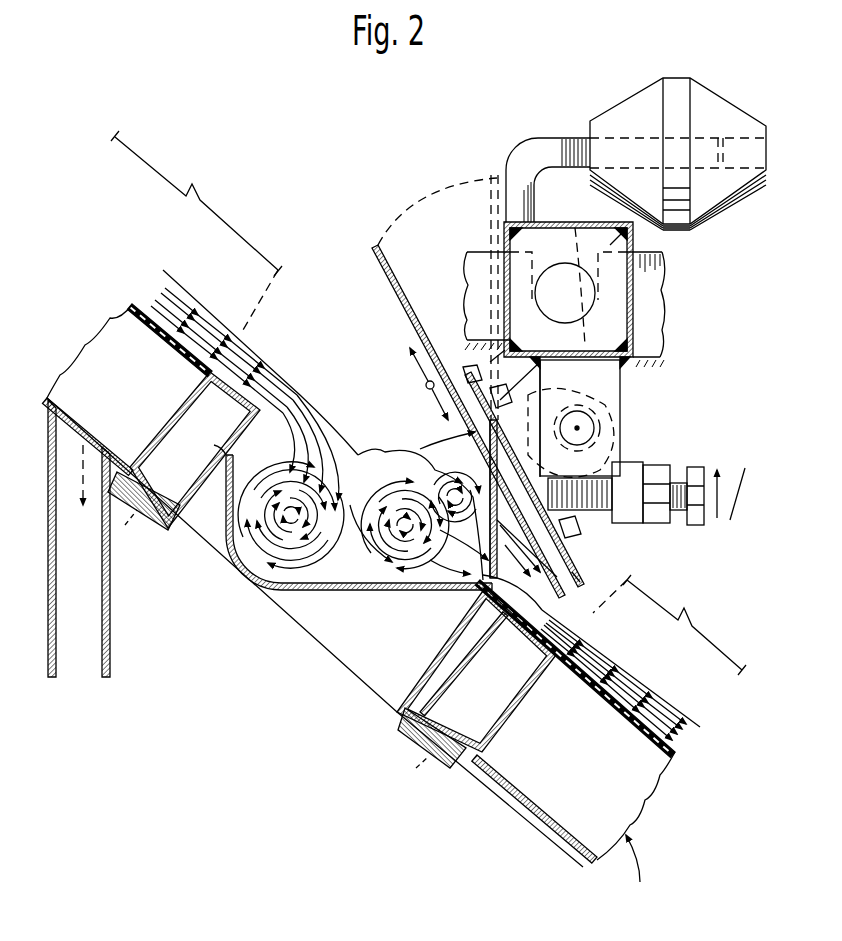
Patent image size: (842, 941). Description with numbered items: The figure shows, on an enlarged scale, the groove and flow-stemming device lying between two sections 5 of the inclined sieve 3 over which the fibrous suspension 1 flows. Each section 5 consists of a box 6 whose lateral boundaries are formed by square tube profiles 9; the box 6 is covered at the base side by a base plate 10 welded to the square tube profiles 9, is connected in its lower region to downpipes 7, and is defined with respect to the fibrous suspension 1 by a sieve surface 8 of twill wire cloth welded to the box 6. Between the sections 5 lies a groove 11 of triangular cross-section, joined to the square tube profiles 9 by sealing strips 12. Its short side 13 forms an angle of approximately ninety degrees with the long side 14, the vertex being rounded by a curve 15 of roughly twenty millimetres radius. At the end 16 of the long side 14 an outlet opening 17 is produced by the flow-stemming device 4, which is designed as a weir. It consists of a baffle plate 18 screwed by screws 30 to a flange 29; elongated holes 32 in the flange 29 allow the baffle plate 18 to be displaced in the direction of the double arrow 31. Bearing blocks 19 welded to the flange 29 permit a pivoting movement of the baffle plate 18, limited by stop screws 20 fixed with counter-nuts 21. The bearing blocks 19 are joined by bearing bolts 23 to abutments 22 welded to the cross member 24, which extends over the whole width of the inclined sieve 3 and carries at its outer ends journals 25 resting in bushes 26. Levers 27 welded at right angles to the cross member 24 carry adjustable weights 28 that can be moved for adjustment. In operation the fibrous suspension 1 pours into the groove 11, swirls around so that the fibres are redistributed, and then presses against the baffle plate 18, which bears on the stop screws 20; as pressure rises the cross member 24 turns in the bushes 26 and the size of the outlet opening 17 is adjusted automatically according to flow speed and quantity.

The fibrous suspension 1 is at (176, 294).
The inclined sieve 3 is at (636, 869).
The flow-stemming device 4 is at (437, 443).
The section 5 is at (428, 403).
The box 6 is at (361, 582).
The downpipe 7 is at (80, 672).
The sieve surface 8 is at (150, 311).
The square tube profile 9 is at (178, 404).
The base plate 10 is at (117, 452).
The groove 11 is at (332, 594).
The sealing strip 12 is at (163, 522).
The short side 13 is at (226, 510).
The long side 14 is at (415, 592).
The curve 15 is at (256, 575).
The end 16 is at (490, 517).
The outlet opening 17 is at (488, 590).
The baffle plate 18 is at (389, 272).
The bearing block 19 is at (540, 417).
The stop screw 20 is at (696, 468).
The counter-nut 21 is at (651, 470).
The abutment 22 is at (608, 385).
The bearing bolt 23 is at (580, 428).
The cross member 24 is at (632, 243).
The journal 25 is at (556, 280).
The bush 26 is at (578, 240).
The lever 27 is at (560, 140).
The adjustable weight 28 is at (635, 102).
The flange 29 is at (470, 372).
The screw 30 is at (508, 396).
The double arrow 31 is at (427, 389).
The elongated hole 32 is at (495, 378).